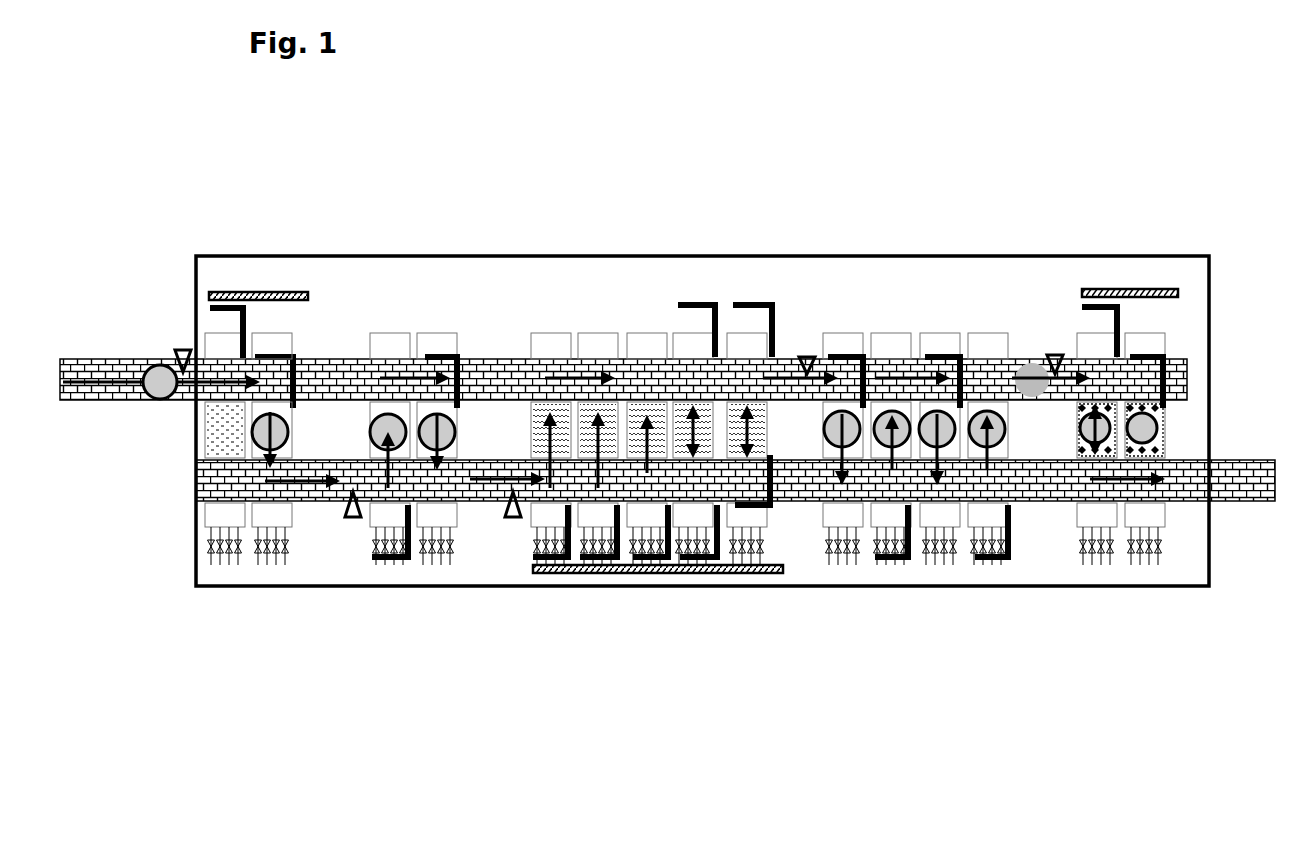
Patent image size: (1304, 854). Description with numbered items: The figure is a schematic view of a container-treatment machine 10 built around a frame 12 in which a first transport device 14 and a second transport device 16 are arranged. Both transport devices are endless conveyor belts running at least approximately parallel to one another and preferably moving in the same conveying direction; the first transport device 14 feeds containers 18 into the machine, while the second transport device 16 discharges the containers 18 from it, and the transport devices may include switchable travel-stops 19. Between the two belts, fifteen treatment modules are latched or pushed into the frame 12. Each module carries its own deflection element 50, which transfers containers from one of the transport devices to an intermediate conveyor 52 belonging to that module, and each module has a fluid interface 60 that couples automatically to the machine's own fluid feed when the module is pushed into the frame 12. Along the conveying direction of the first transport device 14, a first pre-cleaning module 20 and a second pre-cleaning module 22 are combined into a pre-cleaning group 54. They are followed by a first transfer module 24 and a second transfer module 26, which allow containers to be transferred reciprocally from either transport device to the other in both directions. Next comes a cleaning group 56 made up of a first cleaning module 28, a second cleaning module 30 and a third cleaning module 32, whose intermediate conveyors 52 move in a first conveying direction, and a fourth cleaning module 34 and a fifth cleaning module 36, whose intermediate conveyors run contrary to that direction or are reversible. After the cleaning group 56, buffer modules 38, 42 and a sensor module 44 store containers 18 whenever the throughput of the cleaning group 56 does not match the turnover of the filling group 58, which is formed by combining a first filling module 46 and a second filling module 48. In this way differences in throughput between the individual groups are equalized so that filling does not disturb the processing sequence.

The container-treatment machine 10 is at (988, 110).
The frame 12 is at (186, 262).
The first transport device 14 is at (213, 368).
The second transport device 16 is at (1225, 470).
The container 18 is at (162, 383).
The switchable travel-stop 19 is at (1053, 355).
The first pre-cleaning module 20 is at (203, 432).
The second pre-cleaning module 22 is at (305, 533).
The first transfer module 24 is at (395, 347).
The second transfer module 26 is at (438, 345).
The first cleaning module 28 is at (553, 345).
The second cleaning module 30 is at (599, 530).
The third cleaning module 32 is at (648, 332).
The fourth cleaning module 34 is at (693, 345).
The fifth cleaning module 36 is at (760, 345).
The buffer module 38 is at (845, 328).
The buffer module 42 is at (938, 337).
The sensor module 44 is at (982, 515).
The first filling module 46 is at (1097, 530).
The second filling module 48 is at (1162, 330).
The deflection element 50 is at (224, 305).
The intermediate conveyor 52 is at (282, 350).
The pre-cleaning group 54 is at (237, 268).
The cleaning group 56 is at (687, 622).
The filling group 58 is at (1132, 267).
The fluid interface 60 is at (227, 552).